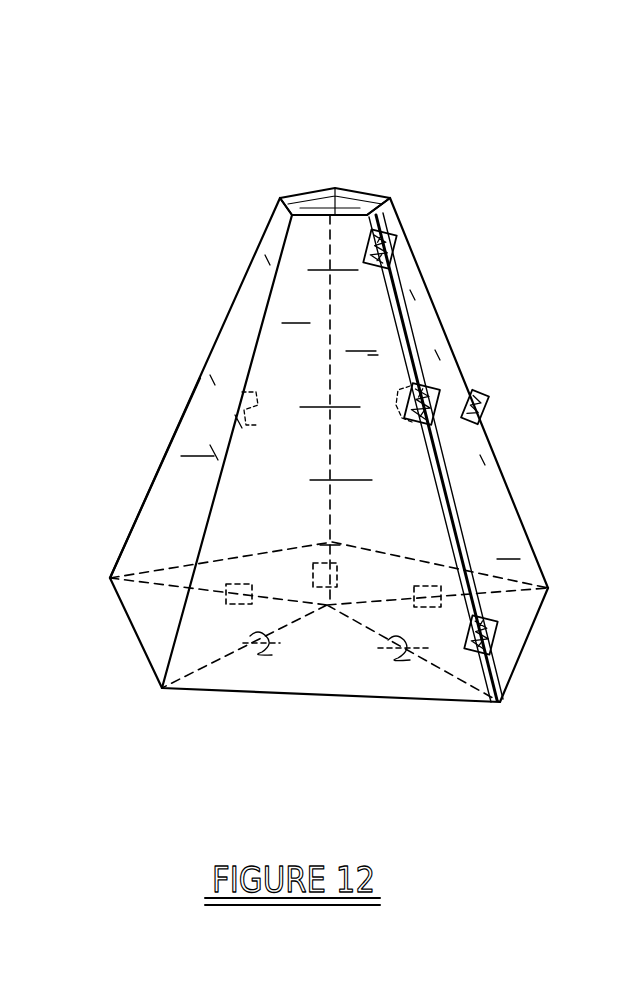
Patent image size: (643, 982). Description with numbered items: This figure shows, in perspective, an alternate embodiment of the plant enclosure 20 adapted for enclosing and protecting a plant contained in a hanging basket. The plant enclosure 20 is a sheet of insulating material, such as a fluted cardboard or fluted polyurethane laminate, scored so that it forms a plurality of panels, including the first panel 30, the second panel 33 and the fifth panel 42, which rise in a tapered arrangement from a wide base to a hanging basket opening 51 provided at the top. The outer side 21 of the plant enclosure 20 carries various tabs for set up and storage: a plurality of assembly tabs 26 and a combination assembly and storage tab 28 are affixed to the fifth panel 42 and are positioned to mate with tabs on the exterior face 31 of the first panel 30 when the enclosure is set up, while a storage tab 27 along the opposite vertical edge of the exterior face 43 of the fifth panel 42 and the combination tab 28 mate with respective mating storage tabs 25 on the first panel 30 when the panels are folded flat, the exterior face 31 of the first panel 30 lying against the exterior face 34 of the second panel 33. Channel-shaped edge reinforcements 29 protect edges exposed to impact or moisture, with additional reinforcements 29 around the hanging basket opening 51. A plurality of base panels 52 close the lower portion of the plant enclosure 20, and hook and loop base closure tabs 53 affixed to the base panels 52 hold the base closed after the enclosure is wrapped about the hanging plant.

The plant enclosure 20 is at (335, 419).
The outer side 21 is at (248, 303).
The mating storage tab 25 is at (252, 438).
The assembly tab 26 is at (396, 247).
The storage tab 27 is at (486, 409).
The combination assembly and storage tab 28 is at (437, 398).
The edge reinforcement 29 is at (282, 208).
The first panel 30 is at (292, 355).
The exterior face 31 is at (331, 410).
The second panel 33 is at (178, 492).
The exterior face 34 is at (211, 436).
The fifth panel 42 is at (492, 478).
The exterior face 43 is at (508, 544).
The hanging basket opening 51 is at (330, 175).
The base panel 52 is at (548, 605).
The base closure tab 53 is at (318, 562).